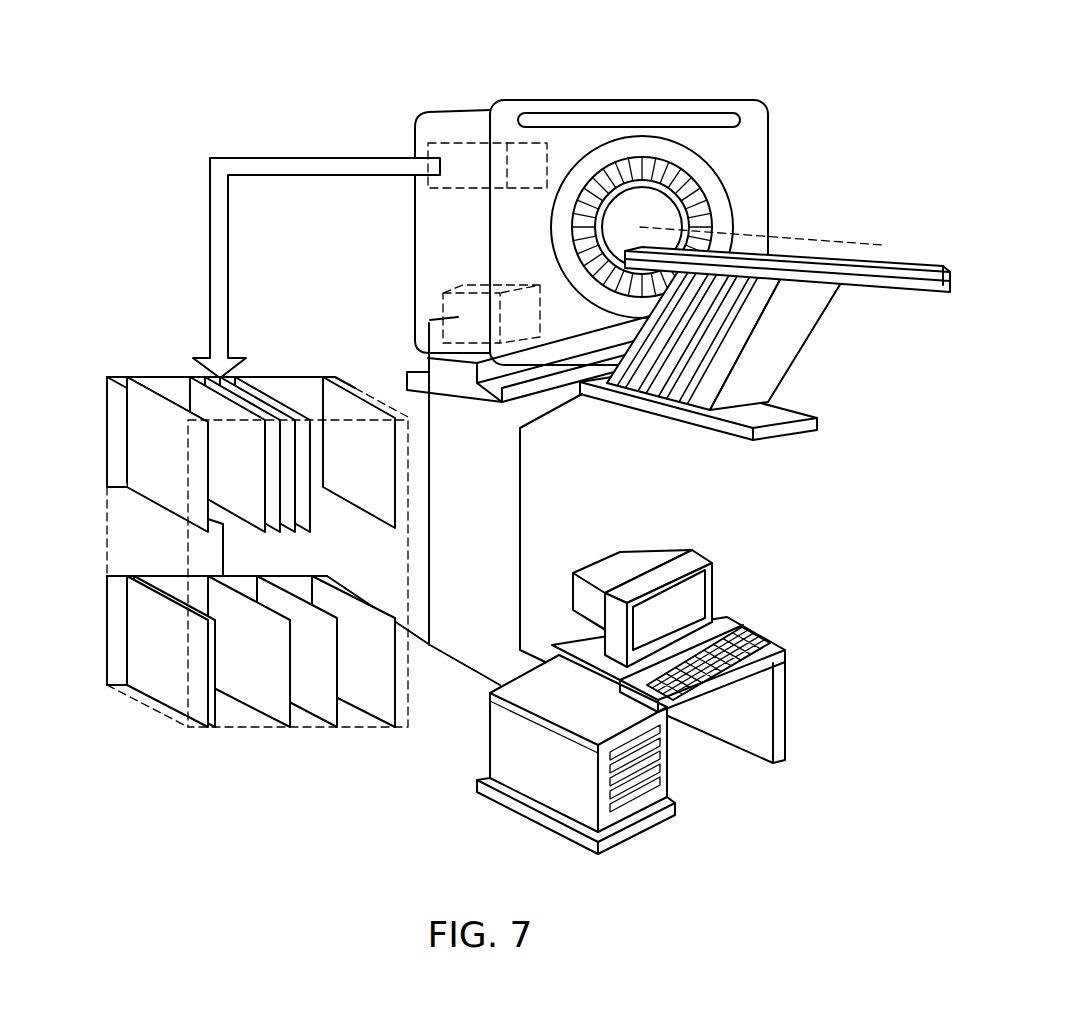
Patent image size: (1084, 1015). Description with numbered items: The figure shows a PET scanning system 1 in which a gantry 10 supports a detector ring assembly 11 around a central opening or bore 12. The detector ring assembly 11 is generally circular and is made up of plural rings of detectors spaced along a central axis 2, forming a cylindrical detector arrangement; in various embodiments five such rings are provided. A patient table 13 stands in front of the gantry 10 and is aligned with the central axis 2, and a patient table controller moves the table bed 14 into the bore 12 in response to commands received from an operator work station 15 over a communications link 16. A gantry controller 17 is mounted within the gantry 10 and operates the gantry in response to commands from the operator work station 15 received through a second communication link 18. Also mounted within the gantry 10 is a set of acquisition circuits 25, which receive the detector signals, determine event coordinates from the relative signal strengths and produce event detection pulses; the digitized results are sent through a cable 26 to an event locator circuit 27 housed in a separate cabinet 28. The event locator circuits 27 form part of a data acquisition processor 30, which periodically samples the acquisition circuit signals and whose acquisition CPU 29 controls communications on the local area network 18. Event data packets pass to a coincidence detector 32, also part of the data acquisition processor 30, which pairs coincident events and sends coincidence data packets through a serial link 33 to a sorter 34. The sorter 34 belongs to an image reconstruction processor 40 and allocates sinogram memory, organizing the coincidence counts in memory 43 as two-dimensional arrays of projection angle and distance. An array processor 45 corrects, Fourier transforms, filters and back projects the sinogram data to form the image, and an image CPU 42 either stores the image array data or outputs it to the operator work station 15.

The PET scanning system 1 is at (248, 71).
The central axis 2 is at (850, 243).
The gantry 10 is at (774, 147).
The detector ring assembly 11 is at (706, 202).
The bore 12 is at (663, 222).
The patient table 13 is at (824, 338).
The table bed 14 is at (903, 273).
The operator work station 15 is at (713, 552).
The communications link 16 is at (521, 494).
The gantry controller 17 is at (450, 292).
The second communication link 18 is at (431, 540).
The acquisition circuits 25 is at (448, 143).
The cable 26 is at (228, 285).
The event locator circuit 27 is at (250, 454).
The cabinet 28 is at (235, 730).
The acquisition CPU 29 is at (359, 452).
The data acquisition processor 30 is at (151, 376).
The coincidence detector 32 is at (157, 454).
The serial link 33 is at (224, 559).
The sorter 34 is at (161, 651).
The image reconstruction processor 40 is at (130, 574).
The image CPU 42 is at (353, 651).
The memory 43 is at (249, 651).
The array processor 45 is at (297, 651).